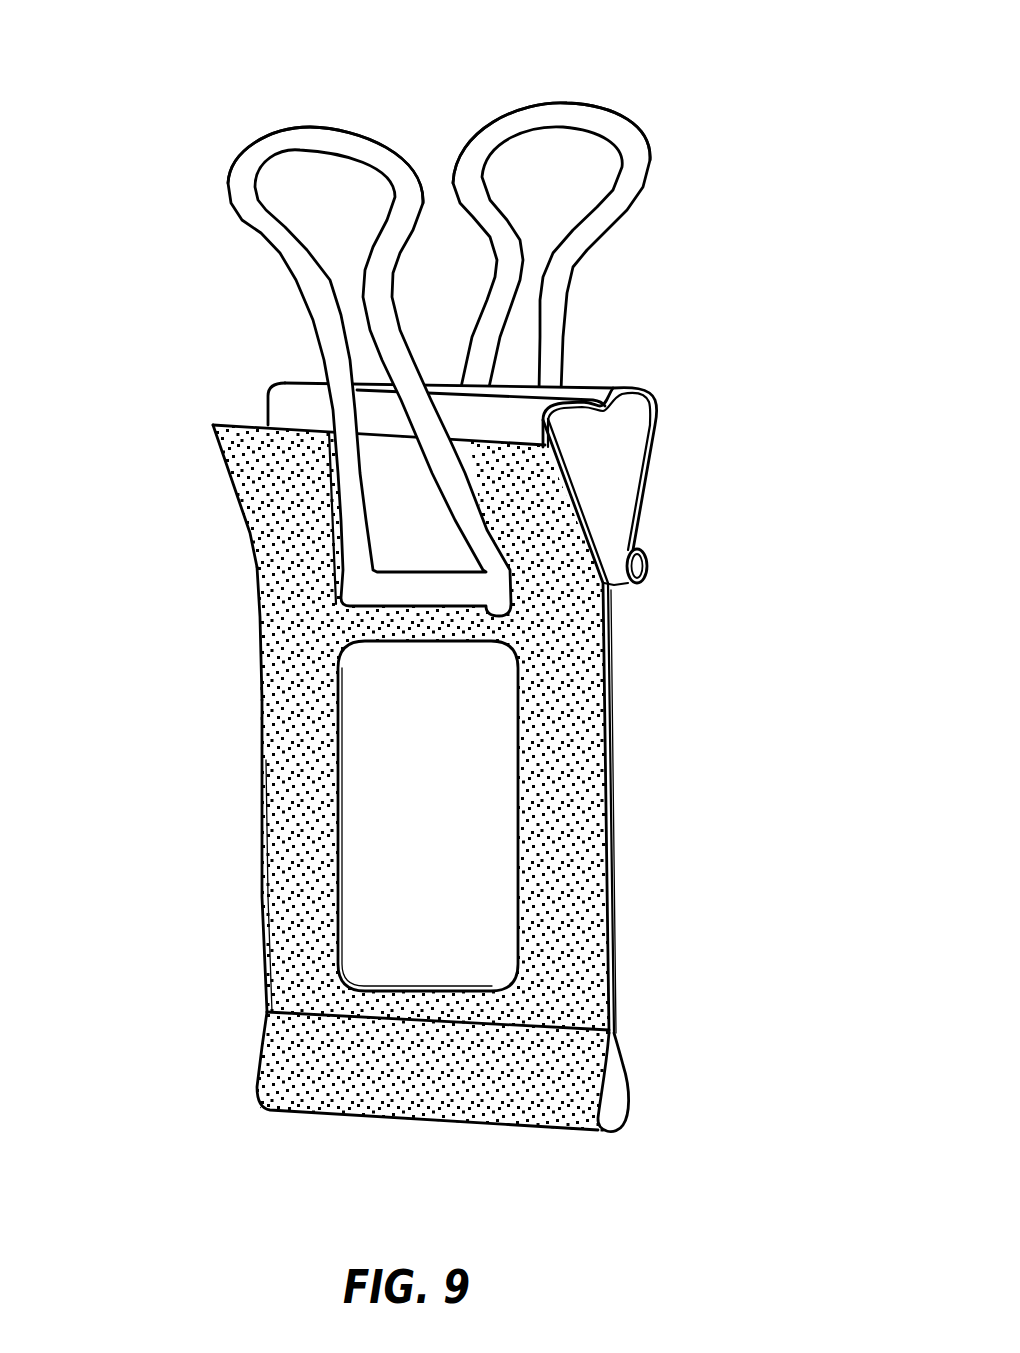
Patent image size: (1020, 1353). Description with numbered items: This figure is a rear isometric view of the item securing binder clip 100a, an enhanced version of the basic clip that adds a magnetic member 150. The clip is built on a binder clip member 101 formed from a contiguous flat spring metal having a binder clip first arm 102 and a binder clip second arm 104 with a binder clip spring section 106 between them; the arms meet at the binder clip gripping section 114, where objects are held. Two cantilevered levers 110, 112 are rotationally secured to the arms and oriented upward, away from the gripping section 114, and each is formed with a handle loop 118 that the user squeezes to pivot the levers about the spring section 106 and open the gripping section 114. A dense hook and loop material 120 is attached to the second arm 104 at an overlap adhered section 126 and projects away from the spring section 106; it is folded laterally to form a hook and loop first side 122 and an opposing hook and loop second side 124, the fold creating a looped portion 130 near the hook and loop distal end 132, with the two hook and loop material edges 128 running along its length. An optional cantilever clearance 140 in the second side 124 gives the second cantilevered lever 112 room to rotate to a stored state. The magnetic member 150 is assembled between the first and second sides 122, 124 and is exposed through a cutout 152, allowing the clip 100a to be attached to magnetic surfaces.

The item securing binder clip 100a is at (457, 308).
The binder clip member 101 is at (439, 739).
The binder clip first arm 102 is at (473, 438).
The binder clip second arm 104 is at (282, 411).
The binder clip spring section 106 is at (319, 370).
The cantilevered lever 110 is at (607, 213).
The cantilevered lever 112 is at (292, 240).
The binder clip gripping section 114 is at (262, 603).
The handle loops 118 is at (284, 118).
The dense hook and loop material 120 is at (598, 748).
The hook and loop first side 122 is at (243, 733).
The hook and loop second side 124 is at (583, 901).
The overlap adhered section 126 is at (272, 518).
The hook and loop material edges 128 is at (260, 812).
The looped portion 130 is at (603, 1088).
The hook and loop distal end 132 is at (463, 1145).
The cantilever clearance 140 is at (427, 535).
The magnetic member 150 is at (449, 840).
The cutout 152 is at (516, 900).